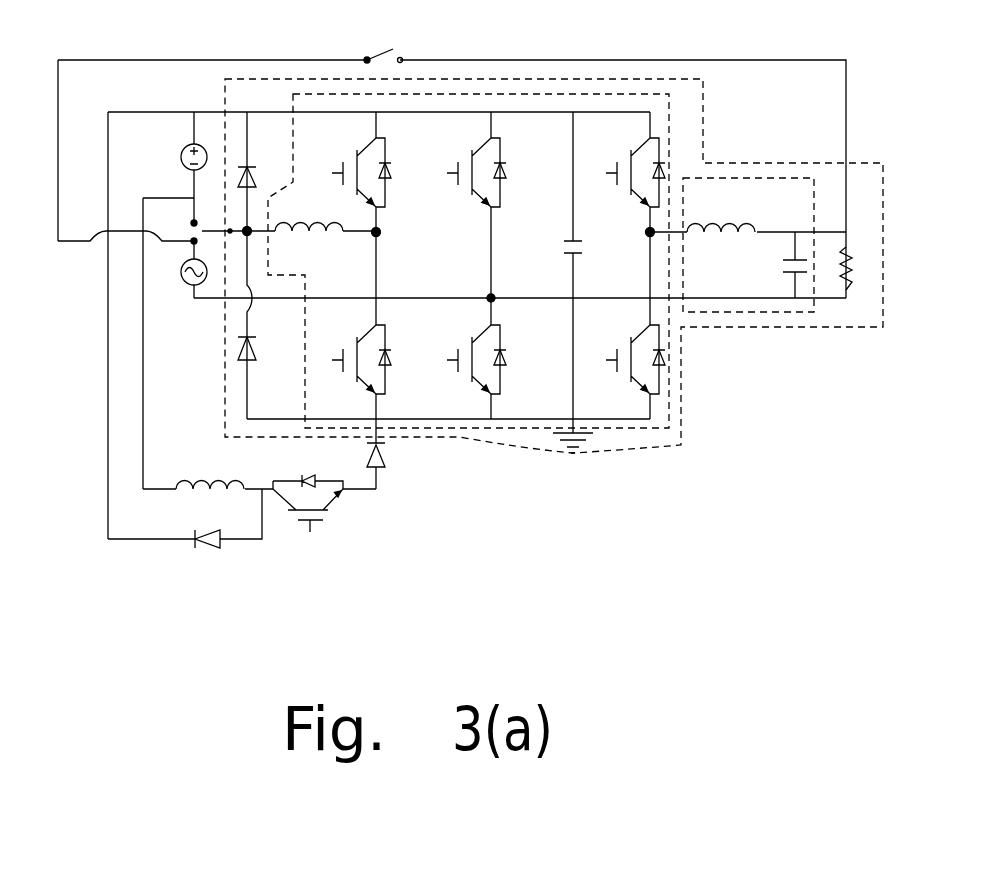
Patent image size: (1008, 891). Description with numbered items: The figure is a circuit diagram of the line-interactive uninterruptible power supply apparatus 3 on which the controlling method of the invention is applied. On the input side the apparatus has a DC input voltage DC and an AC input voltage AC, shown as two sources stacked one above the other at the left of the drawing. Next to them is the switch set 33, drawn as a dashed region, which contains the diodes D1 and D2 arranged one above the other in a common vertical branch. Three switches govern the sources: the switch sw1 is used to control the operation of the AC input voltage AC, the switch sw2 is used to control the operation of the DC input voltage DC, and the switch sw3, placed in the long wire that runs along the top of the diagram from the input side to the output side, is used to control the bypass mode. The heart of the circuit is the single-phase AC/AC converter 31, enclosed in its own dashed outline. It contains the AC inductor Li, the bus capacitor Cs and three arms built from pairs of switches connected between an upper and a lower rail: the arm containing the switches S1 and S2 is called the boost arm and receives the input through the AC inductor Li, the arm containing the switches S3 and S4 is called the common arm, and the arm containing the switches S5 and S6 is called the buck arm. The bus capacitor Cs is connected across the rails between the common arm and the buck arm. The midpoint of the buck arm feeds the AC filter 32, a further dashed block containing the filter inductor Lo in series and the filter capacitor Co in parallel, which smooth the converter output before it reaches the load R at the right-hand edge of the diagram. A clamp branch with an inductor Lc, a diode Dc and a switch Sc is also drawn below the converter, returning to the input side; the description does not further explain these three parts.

The line-interactive uninterruptible power supply apparatus 3 is at (770, 468).
The single-phase AC/AC converter 31 is at (627, 430).
The AC filter 32 is at (738, 313).
The switch set 33 is at (493, 446).
The switch SW1 sw1 is at (215, 250).
The switch SW2 sw2 is at (219, 217).
The switch SW3 sw3 is at (389, 43).
The DC input voltage DC is at (182, 167).
The AC input voltage AC is at (182, 269).
The diode D1 is at (262, 177).
The diode D2 is at (262, 348).
The AC inductor Li is at (311, 209).
The switch S1 is at (361, 163).
The switch S2 is at (361, 352).
The switch S3 is at (471, 163).
The switch S4 is at (471, 352).
The switch S5 is at (635, 163).
The switch S6 is at (635, 352).
The bus capacitor Cs is at (564, 282).
The filter inductor Lo is at (748, 209).
The filter capacitor Co is at (782, 265).
The load R is at (856, 268).
The clamp inductor Lc is at (208, 471).
The clamp diode Dc is at (185, 518).
The clamp switch Sc is at (324, 504).